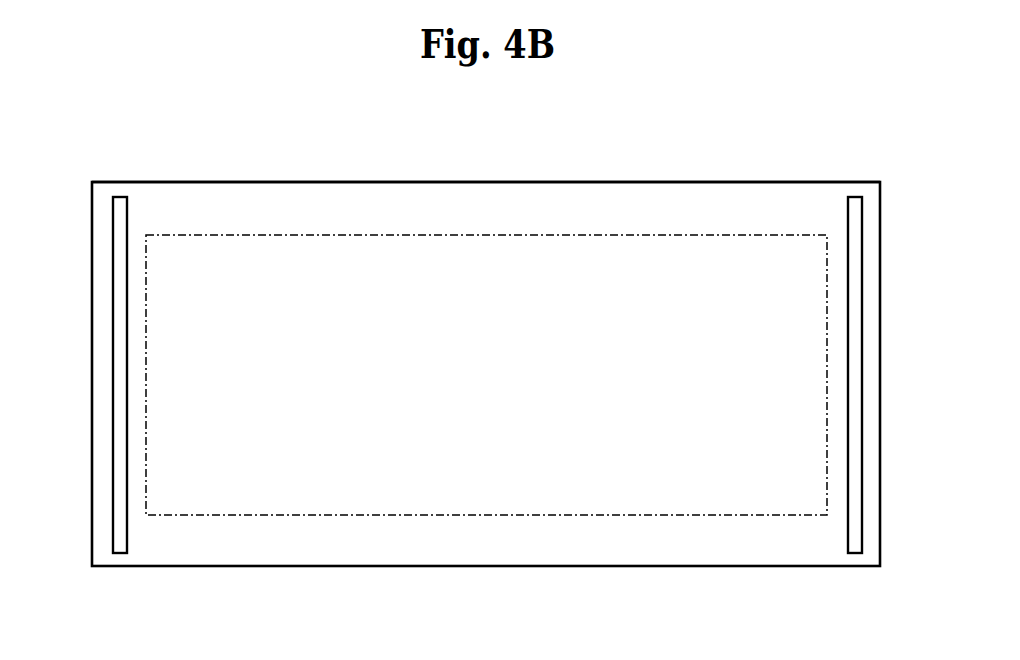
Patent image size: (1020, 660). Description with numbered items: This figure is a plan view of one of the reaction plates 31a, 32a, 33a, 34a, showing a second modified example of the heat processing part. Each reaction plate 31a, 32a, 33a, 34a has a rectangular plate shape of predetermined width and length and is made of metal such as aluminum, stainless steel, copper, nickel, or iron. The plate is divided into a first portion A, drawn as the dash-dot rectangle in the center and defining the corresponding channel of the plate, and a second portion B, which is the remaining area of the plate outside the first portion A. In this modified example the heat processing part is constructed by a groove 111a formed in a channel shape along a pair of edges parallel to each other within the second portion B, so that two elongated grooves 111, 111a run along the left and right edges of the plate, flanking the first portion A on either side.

The reaction plate 31a is at (486, 401).
The reaction plate 32a is at (486, 374).
The reaction plate 33a is at (486, 374).
The reaction plate 34a is at (607, 567).
The electrode 111 is at (121, 233).
The groove 111a is at (854, 233).
The first portion A is at (305, 503).
The second portion B is at (361, 184).